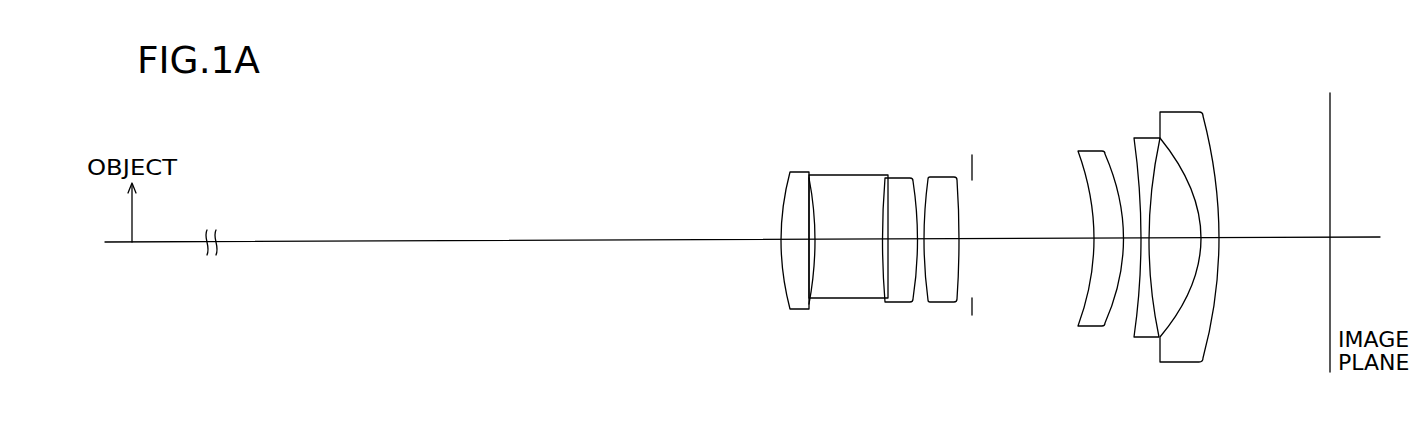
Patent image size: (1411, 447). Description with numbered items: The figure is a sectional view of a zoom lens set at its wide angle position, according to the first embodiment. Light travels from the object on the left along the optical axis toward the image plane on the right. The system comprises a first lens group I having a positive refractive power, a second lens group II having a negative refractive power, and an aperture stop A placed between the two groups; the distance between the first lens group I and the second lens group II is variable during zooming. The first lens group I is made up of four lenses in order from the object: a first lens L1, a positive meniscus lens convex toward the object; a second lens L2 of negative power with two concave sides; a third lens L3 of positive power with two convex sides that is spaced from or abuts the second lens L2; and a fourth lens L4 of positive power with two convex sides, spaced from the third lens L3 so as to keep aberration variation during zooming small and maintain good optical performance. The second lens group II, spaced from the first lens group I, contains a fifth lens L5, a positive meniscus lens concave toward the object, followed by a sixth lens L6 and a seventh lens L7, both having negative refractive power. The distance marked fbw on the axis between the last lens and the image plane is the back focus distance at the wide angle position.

The first lens group I is at (957, 108).
The second lens group II is at (1213, 63).
The first lens L1 is at (802, 175).
The second lens L2 is at (845, 180).
The third lens L3 is at (900, 188).
The fourth lens L4 is at (942, 183).
The fifth lens L5 is at (1092, 160).
The sixth lens L6 is at (1147, 143).
The seventh lens L7 is at (1182, 122).
The aperture stop A is at (972, 315).
The back focus distance at a wide angle position fbw is at (1271, 237).